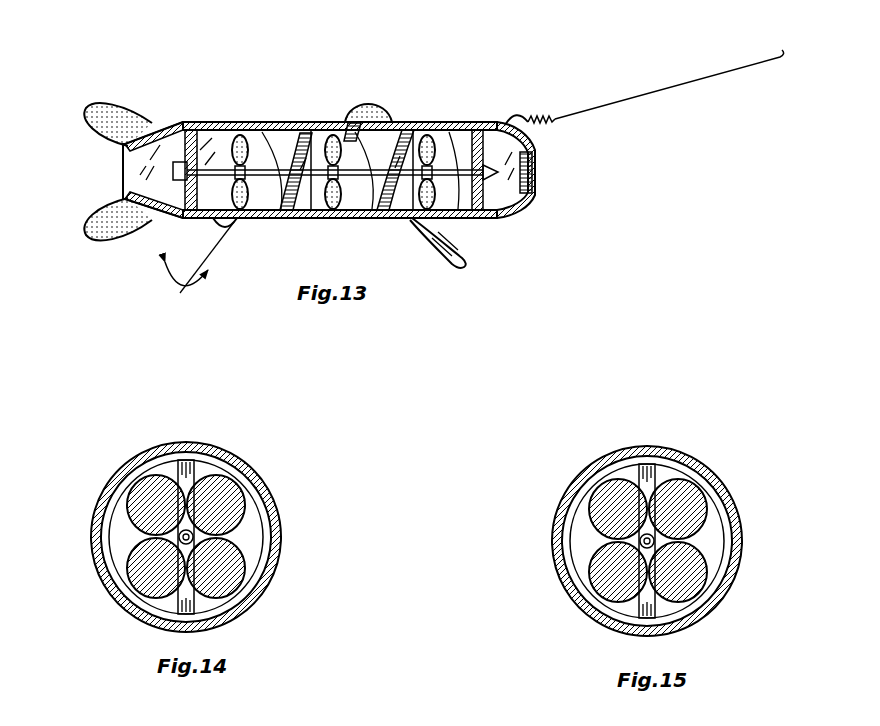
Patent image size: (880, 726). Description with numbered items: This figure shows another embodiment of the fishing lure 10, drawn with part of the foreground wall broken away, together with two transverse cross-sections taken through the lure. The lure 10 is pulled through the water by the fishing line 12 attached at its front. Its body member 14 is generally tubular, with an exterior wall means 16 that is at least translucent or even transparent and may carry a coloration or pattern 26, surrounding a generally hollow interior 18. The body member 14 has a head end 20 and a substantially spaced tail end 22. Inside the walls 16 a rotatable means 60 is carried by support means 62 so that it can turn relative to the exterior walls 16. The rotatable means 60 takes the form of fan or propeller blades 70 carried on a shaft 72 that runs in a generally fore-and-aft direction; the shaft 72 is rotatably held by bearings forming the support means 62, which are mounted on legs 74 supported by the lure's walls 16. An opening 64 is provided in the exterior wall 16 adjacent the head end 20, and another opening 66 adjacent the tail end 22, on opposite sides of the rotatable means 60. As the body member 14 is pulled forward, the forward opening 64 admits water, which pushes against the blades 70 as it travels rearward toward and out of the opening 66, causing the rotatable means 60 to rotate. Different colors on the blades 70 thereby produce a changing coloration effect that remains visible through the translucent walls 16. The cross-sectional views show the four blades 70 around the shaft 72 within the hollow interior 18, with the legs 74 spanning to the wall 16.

In FIG. 13, the fishing lure 10 is at (488, 108).
In FIG. 14, the fishing lure 10 is at (305, 462).
In FIG. 15, the fishing lure 10 is at (745, 462).
In FIG. 13, the fishing line 12 is at (739, 69).
In FIG. 13, the body member 14 is at (459, 121).
In FIG. 14, the body member 14 is at (257, 466).
In FIG. 15, the body member 14 is at (709, 463).
In FIG. 13, the exterior wall means 16 is at (368, 210).
In FIG. 14, the exterior wall means 16 is at (270, 492).
In FIG. 15, the exterior wall means 16 is at (728, 483).
In FIG. 13, the hollow interior 18 is at (325, 126).
In FIG. 14, the hollow interior 18 is at (258, 528).
In FIG. 15, the hollow interior 18 is at (720, 530).
In FIG. 13, the head end 20 is at (492, 125).
In FIG. 13, the tail end 22 is at (178, 122).
In FIG. 13, the coloration or pattern 26 is at (379, 217).
In FIG. 13, the rotatable means 60 is at (258, 142).
In FIG. 14, the rotatable means 60 is at (245, 548).
In FIG. 15, the rotatable means 60 is at (709, 565).
In FIG. 13, the support means 62 is at (180, 212).
In FIG. 13, the opening 64 is at (534, 177).
In FIG. 13, the opening 66 is at (124, 175).
In FIG. 14, the blades 70 is at (128, 508).
In FIG. 15, the blades 70 is at (593, 555).
In FIG. 13, the shaft 72 is at (307, 217).
In FIG. 14, the shaft 72 is at (150, 553).
In FIG. 15, the shaft 72 is at (607, 580).
In FIG. 13, the legs 74 is at (490, 218).
In FIG. 14, the legs 74 is at (206, 453).
In FIG. 15, the legs 74 is at (668, 460).